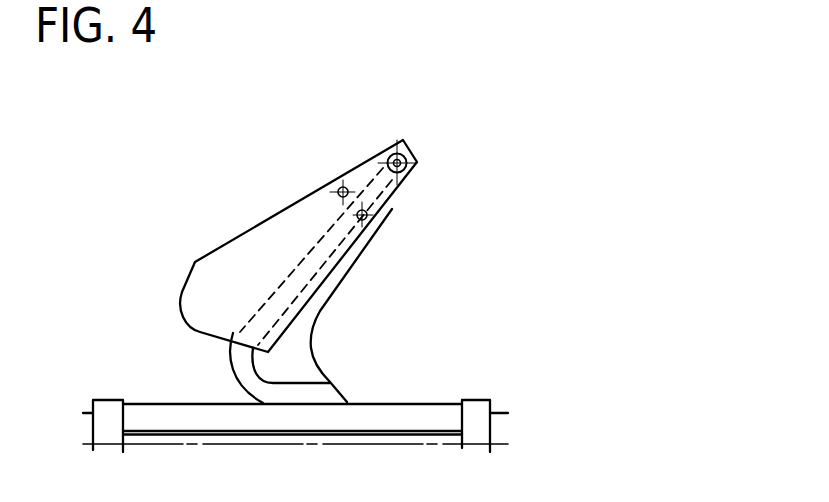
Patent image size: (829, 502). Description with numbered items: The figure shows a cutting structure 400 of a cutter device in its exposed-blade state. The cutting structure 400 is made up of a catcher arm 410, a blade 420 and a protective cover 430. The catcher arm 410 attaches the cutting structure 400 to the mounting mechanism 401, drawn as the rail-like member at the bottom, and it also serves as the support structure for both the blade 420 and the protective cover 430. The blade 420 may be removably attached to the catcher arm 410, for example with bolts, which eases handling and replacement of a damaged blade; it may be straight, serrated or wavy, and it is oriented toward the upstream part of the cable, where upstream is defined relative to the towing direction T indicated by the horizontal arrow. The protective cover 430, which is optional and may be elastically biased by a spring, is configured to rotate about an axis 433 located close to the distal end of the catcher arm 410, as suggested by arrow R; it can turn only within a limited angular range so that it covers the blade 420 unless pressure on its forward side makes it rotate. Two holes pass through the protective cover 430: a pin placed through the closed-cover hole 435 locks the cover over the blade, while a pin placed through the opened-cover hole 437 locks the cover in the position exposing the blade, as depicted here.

The cutting structure 400 is at (247, 81).
The mounting mechanism 401 is at (425, 403).
The catcher arm 410 is at (230, 370).
The blade 420 is at (320, 311).
The protective cover 430 is at (277, 253).
The axis 433 is at (414, 157).
The closed-cover hole 435 is at (373, 212).
The opened-cover hole 437 is at (337, 183).
The arrow indicating cover rotation R is at (358, 153).
The towing direction T is at (690, 248).